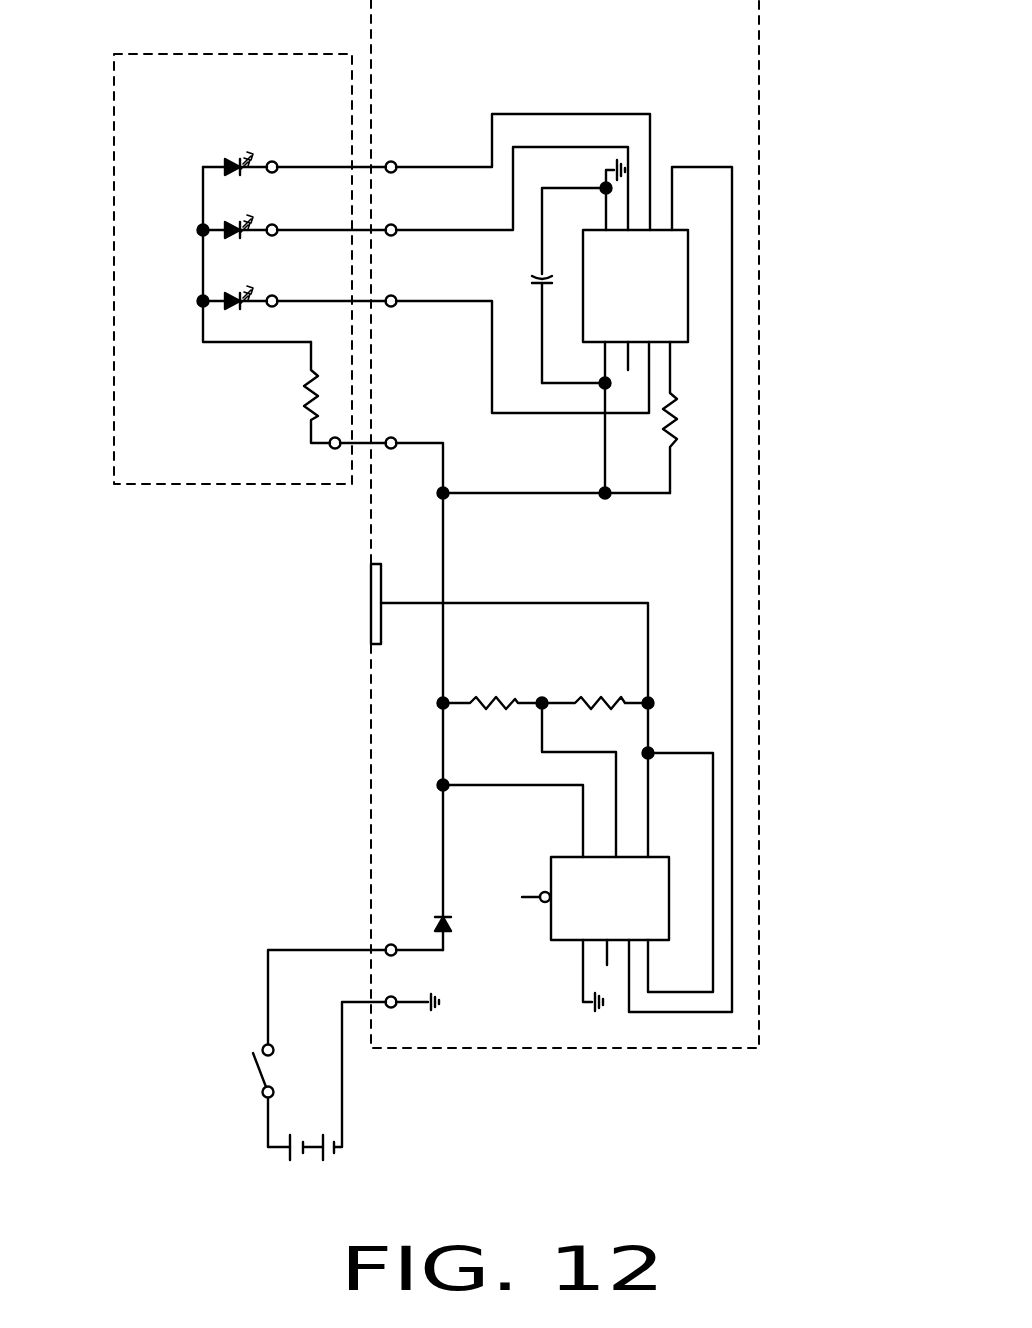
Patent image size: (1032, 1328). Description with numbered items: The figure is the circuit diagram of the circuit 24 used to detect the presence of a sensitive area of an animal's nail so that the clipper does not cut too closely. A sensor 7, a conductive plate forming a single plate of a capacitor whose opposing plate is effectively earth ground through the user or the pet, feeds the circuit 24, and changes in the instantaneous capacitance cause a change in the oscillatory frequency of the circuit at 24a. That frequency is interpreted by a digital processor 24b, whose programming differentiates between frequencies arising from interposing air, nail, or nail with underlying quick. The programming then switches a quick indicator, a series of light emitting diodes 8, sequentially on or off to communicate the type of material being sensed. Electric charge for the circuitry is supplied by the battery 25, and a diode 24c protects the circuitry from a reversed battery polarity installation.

The sensor 7 is at (371, 596).
The light emitting diodes 8 is at (160, 263).
The circuit 24 is at (759, 80).
The oscillatory frequency circuit portion 24a is at (655, 897).
The digital processor 24b is at (668, 292).
The diode 24c is at (440, 915).
The battery 25 is at (306, 1163).